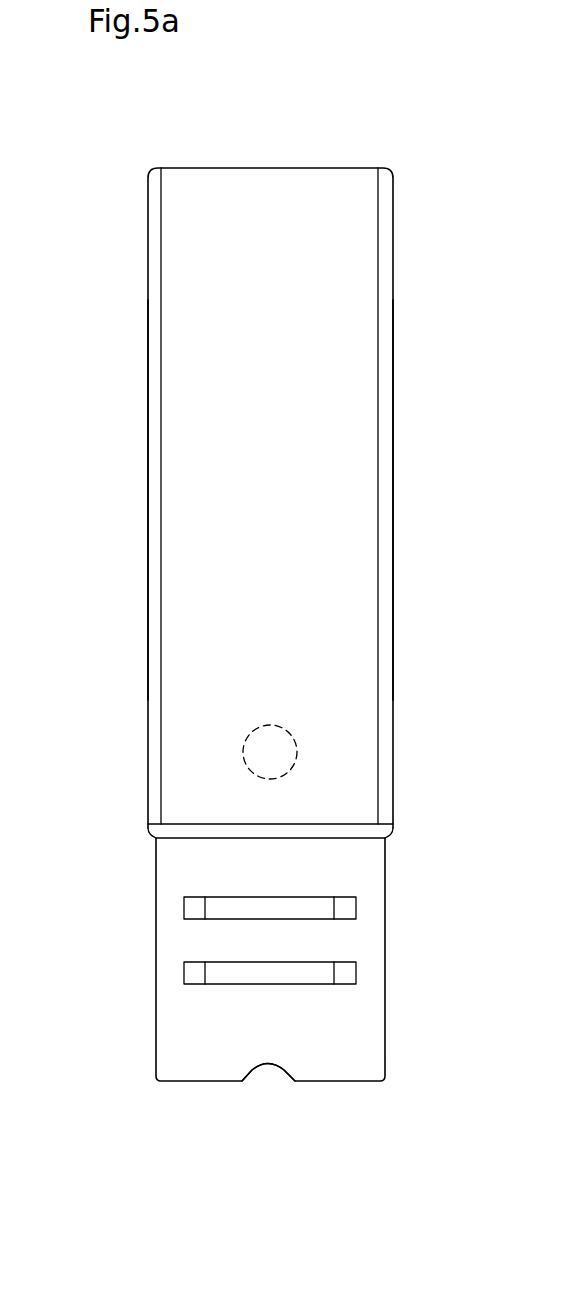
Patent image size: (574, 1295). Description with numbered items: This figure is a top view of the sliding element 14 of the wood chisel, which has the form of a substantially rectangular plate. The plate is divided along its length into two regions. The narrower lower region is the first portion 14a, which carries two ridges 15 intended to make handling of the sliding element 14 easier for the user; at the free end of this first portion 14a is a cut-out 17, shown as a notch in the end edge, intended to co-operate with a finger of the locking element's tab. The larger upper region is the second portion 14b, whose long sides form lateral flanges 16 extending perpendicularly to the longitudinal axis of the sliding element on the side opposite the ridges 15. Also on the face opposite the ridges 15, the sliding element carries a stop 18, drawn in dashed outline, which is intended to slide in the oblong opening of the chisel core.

The sliding element 14 is at (272, 627).
The first portion 14a is at (303, 1032).
The second portion 14b is at (337, 180).
The ridges 15 is at (302, 908).
The lateral flanges 16 is at (155, 435).
The cut-out 17 is at (268, 1065).
The stop 18 is at (278, 750).